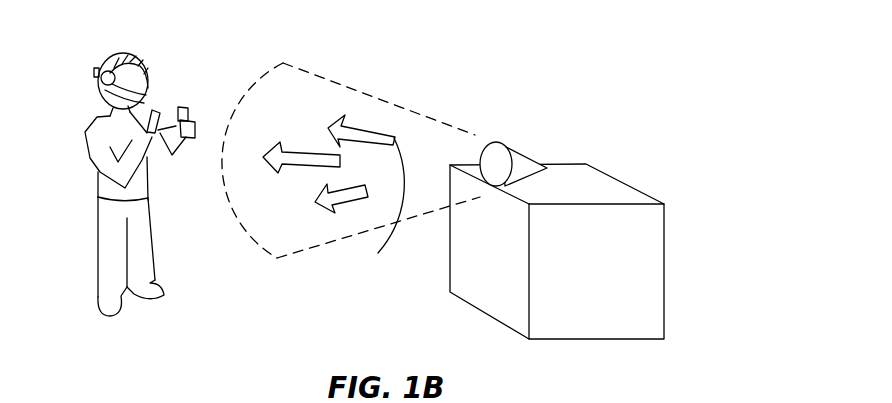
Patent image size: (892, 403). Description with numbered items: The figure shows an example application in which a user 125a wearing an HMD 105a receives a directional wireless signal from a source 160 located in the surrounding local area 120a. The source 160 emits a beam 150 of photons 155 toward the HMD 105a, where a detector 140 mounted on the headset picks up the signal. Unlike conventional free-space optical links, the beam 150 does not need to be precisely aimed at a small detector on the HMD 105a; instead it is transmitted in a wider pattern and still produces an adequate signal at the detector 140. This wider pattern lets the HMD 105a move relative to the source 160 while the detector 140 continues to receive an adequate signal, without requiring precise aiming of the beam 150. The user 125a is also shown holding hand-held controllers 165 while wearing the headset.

The HMD 105a is at (131, 56).
The local area 120a is at (713, 75).
The user 125a is at (93, 117).
The detector 140 is at (97, 67).
The beam 150 is at (384, 102).
The photons 155 is at (293, 167).
The source 160 is at (515, 150).
The hand-held controllers 165 is at (184, 107).